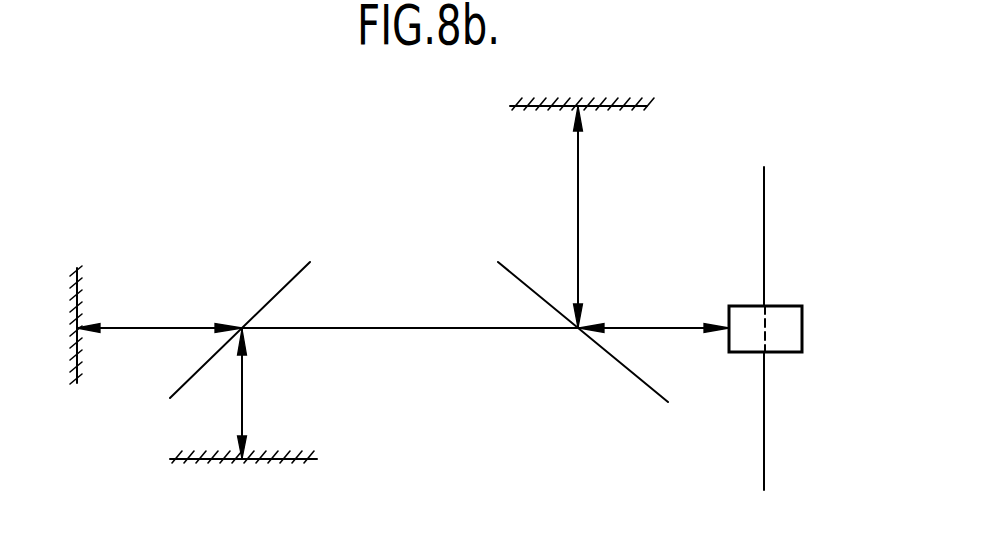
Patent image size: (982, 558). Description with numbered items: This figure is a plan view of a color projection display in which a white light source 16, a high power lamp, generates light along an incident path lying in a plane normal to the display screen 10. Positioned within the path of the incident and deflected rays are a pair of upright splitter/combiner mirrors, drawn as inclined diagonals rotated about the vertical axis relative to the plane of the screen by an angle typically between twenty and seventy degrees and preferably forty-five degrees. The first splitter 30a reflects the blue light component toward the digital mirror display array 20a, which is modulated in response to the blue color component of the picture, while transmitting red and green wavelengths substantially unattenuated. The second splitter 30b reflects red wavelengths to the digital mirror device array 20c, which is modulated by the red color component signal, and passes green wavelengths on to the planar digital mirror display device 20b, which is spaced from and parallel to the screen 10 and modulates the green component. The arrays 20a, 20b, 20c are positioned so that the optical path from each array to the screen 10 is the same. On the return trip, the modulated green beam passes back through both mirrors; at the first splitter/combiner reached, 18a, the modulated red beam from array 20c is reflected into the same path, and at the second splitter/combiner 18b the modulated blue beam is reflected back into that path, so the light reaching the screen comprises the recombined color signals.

The display screen 10 is at (764, 465).
The white light source 16 is at (797, 330).
The first splitter/combiner 18a is at (293, 273).
The second splitter/combiner 18b is at (635, 375).
The digital mirror display array 20a is at (631, 108).
The planar digital mirror display device 20b is at (73, 370).
The digital mirror device array 20c is at (305, 462).
The first splitter 30a is at (583, 349).
The second splitter 30b is at (274, 282).